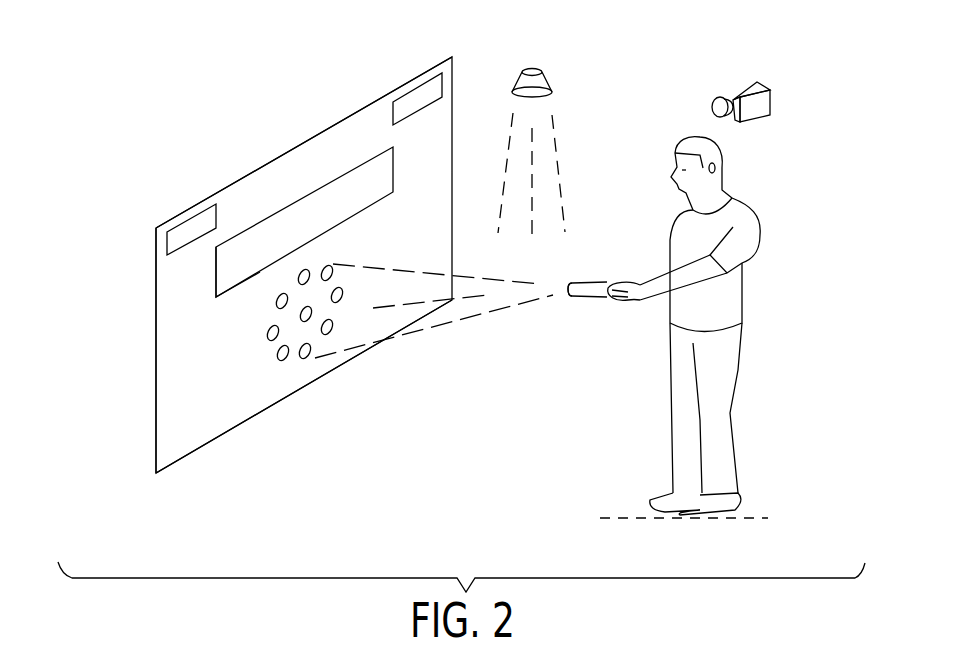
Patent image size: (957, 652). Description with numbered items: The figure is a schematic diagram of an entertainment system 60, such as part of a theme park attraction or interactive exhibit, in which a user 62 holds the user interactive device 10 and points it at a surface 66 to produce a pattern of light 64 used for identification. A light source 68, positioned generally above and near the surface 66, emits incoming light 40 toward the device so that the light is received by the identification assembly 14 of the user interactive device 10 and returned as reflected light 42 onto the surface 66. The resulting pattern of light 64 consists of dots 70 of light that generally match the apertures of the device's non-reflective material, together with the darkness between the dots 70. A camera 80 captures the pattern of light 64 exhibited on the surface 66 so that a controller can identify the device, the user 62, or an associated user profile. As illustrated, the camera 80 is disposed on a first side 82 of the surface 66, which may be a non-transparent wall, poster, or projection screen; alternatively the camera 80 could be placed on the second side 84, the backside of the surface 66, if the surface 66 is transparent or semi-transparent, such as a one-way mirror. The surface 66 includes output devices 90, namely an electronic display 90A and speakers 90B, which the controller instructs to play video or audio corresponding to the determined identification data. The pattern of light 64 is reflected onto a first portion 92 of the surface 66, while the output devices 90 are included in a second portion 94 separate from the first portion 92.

The user interactive device 10 is at (590, 313).
The identification assembly 14 is at (571, 270).
The incoming light 40 is at (568, 157).
The reflected light 42 is at (503, 330).
The entertainment system 60 is at (759, 96).
The user 62 is at (757, 318).
The pattern of light 64 is at (234, 332).
The surface 66 is at (306, 138).
The light source 68 is at (550, 82).
The dots 70 is at (274, 368).
The camera 80 is at (760, 108).
The first side 82 is at (490, 468).
The second side 84 is at (104, 411).
The output devices 90 is at (186, 174).
The electronic display 90A is at (222, 273).
The speakers 90B is at (418, 85).
The first portion 92 is at (320, 391).
The second portion 94 is at (326, 98).